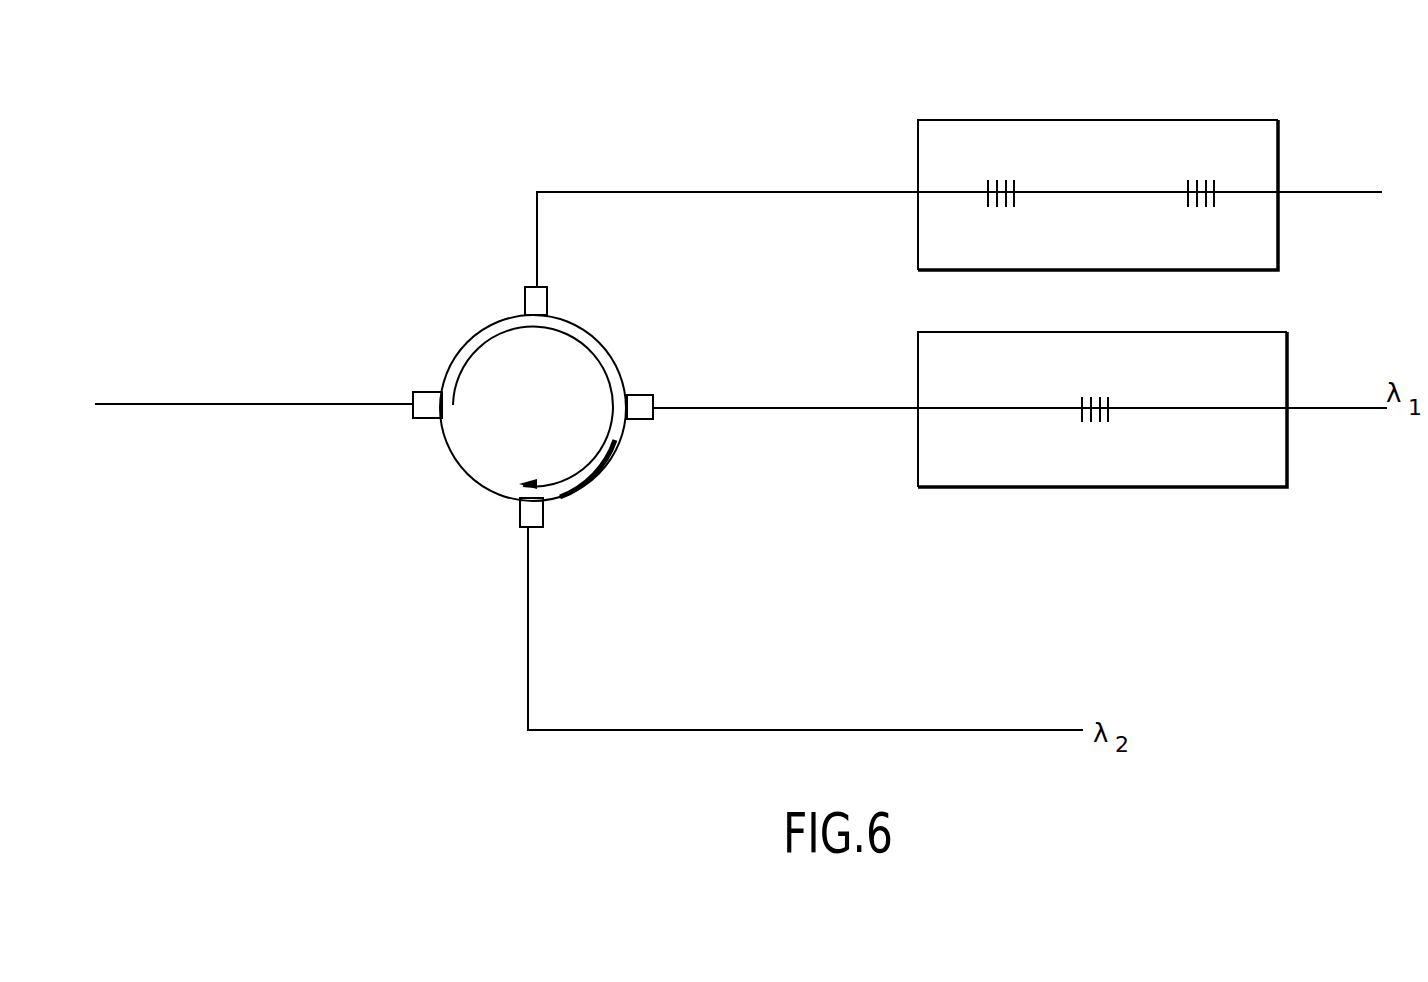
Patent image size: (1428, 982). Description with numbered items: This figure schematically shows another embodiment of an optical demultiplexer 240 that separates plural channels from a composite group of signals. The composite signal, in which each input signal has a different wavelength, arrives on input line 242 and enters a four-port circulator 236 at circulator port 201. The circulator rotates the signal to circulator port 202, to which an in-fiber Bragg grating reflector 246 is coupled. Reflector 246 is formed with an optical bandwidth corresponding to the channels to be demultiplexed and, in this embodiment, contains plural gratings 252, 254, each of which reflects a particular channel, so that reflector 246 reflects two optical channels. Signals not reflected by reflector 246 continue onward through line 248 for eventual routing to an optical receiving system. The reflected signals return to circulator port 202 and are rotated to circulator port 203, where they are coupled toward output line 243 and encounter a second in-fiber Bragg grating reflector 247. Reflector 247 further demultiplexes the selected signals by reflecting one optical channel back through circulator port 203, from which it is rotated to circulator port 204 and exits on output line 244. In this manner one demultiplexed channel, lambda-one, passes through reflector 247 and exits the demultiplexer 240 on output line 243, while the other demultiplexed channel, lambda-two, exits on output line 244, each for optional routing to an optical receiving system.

The circulator port 201 is at (415, 420).
The circulator port 202 is at (539, 285).
The circulator port 203 is at (642, 395).
The circulator port 204 is at (518, 522).
The four-port circulator 236 is at (603, 340).
The demultiplexer 240 is at (731, 192).
The input line 242 is at (243, 403).
The output line 243 is at (1362, 410).
The output line 244 is at (800, 730).
The in-fiber Bragg grating reflector 246 is at (1098, 144).
The in-fiber Bragg grating reflector 247 is at (987, 487).
The line 248 is at (1370, 193).
The grating 252 is at (1010, 175).
The grating 254 is at (1203, 175).